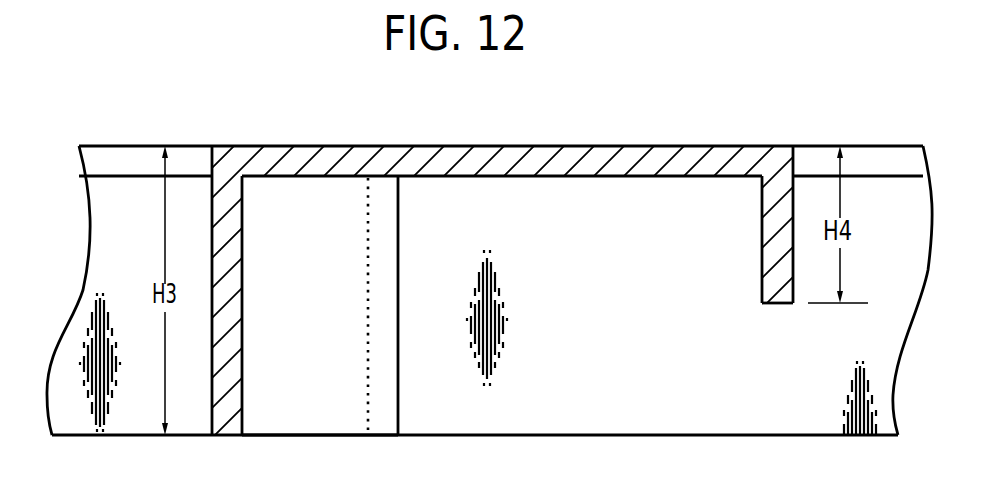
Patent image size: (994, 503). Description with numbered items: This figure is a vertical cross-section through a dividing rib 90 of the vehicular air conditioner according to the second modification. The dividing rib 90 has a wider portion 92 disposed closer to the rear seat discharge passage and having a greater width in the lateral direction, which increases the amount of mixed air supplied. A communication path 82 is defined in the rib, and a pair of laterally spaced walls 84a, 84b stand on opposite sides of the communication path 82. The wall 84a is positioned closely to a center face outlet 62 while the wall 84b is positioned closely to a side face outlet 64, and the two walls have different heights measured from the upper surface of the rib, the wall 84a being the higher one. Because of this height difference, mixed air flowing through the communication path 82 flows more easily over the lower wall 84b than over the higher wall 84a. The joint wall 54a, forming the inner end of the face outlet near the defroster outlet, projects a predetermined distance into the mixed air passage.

The dividing rib 90 is at (516, 138).
The communication path 82 is at (613, 176).
The joint wall 54a is at (671, 243).
The center face outlet 62 is at (872, 153).
The side face outlet 64 is at (118, 162).
The wall 84a is at (227, 340).
The wall 84b is at (770, 252).
The wider portion 92 is at (348, 423).